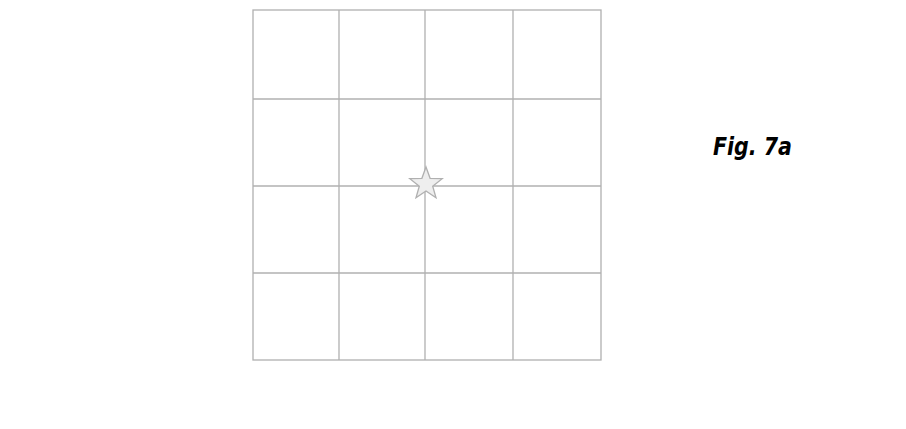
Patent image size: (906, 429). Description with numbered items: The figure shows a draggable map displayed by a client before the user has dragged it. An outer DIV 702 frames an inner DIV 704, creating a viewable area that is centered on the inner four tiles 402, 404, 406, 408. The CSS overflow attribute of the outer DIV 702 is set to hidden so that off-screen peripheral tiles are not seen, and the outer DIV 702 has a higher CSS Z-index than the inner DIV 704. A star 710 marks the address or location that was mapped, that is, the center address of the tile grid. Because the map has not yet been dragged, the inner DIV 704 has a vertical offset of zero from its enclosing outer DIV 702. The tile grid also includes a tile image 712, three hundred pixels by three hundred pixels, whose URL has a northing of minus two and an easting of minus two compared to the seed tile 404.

The outer DIV 702 is at (339, 99).
The inner DIV 704 is at (339, 99).
The tile 402 is at (382, 142).
The seed tile 404 is at (469, 142).
The tile 406 is at (382, 229).
The tile 408 is at (469, 229).
The star 710 is at (441, 188).
The tile image 712 is at (296, 316).